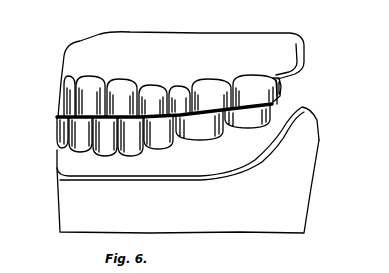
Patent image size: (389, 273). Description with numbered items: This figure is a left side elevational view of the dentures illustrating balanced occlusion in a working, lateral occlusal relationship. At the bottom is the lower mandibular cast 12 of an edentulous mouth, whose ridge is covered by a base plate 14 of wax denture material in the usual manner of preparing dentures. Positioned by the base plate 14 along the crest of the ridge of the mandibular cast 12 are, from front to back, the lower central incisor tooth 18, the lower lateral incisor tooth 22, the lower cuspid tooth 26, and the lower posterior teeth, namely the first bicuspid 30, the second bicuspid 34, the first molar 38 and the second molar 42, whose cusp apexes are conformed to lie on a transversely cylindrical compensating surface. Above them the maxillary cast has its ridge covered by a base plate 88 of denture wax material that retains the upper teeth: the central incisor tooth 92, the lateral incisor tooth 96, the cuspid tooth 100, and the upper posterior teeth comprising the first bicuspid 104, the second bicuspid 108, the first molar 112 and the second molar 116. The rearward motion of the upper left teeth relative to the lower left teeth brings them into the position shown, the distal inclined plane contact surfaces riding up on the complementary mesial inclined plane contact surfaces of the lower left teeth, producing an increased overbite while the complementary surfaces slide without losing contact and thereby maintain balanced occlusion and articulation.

The lower mandibular cast 12 is at (311, 188).
The base plate 14 is at (62, 169).
The lower central incisor tooth 18 is at (57, 142).
The lower lateral incisor tooth 22 is at (86, 153).
The lower cuspid tooth 26 is at (104, 157).
The first bicuspid 30 is at (125, 156).
The second bicuspid 34 is at (161, 148).
The first molar 38 is at (203, 140).
The second molar 42 is at (242, 129).
The base plate 88 is at (296, 53).
The central incisor tooth 92 is at (63, 93).
The lateral incisor tooth 96 is at (97, 80).
The cuspid tooth 100 is at (125, 82).
The first bicuspid 104 is at (171, 78).
The second bicuspid 108 is at (193, 86).
The first molar 112 is at (230, 84).
The second molar 116 is at (281, 87).